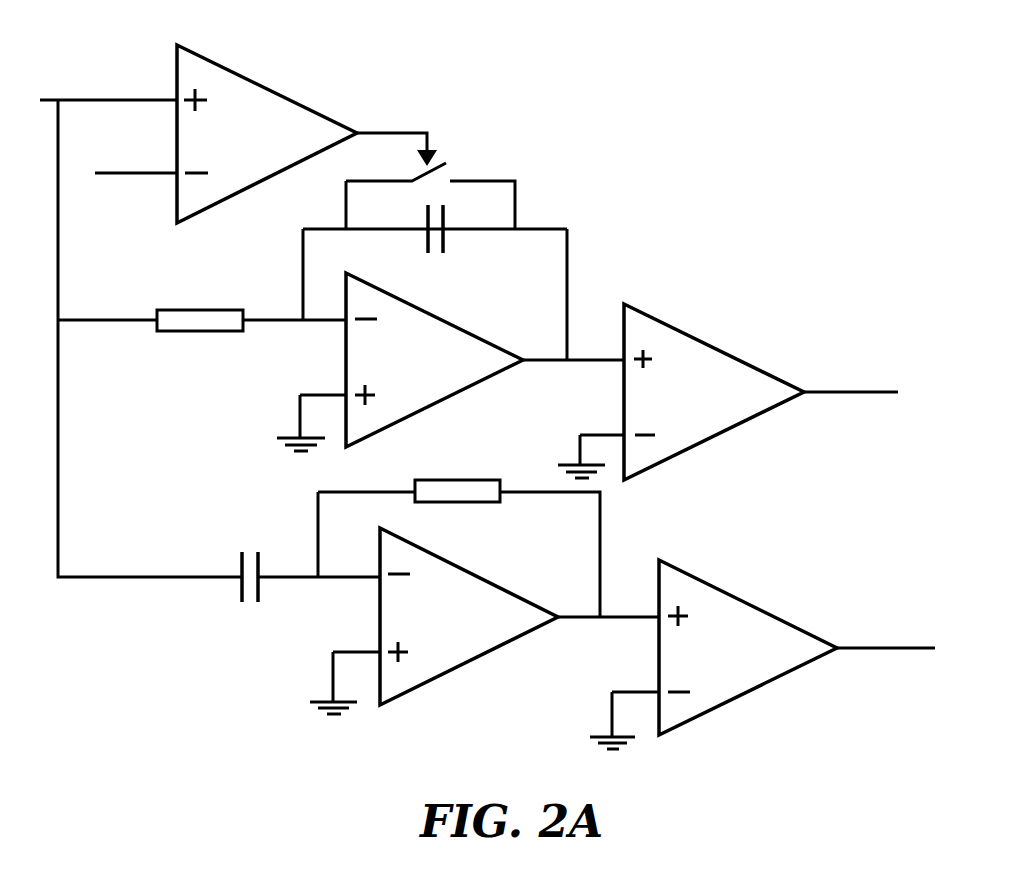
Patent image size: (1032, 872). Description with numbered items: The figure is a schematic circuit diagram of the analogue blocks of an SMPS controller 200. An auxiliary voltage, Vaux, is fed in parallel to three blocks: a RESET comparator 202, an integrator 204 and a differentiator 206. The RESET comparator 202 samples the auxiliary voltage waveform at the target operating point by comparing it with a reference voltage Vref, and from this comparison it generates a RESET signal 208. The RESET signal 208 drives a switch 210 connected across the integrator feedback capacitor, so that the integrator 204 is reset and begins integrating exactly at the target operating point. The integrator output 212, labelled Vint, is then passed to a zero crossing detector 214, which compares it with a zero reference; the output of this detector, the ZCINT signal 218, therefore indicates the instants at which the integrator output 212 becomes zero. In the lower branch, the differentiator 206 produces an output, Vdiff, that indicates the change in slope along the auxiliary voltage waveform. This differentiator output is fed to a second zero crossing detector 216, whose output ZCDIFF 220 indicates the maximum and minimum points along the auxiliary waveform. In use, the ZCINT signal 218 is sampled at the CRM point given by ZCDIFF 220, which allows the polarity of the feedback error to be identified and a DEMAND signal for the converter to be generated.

The controller 200 is at (146, 752).
The RESET comparator 202 is at (267, 134).
The integrator 204 is at (434, 360).
The differentiator 206 is at (469, 616).
The RESET signal 208 is at (396, 128).
The switch 210 is at (459, 165).
The integrator output 212 is at (567, 262).
The zero crossing detector 214 is at (714, 392).
The second zero crossing detector 216 is at (748, 647).
The ZCINT signal 218 is at (815, 393).
The ZCDIFF 220 is at (858, 650).